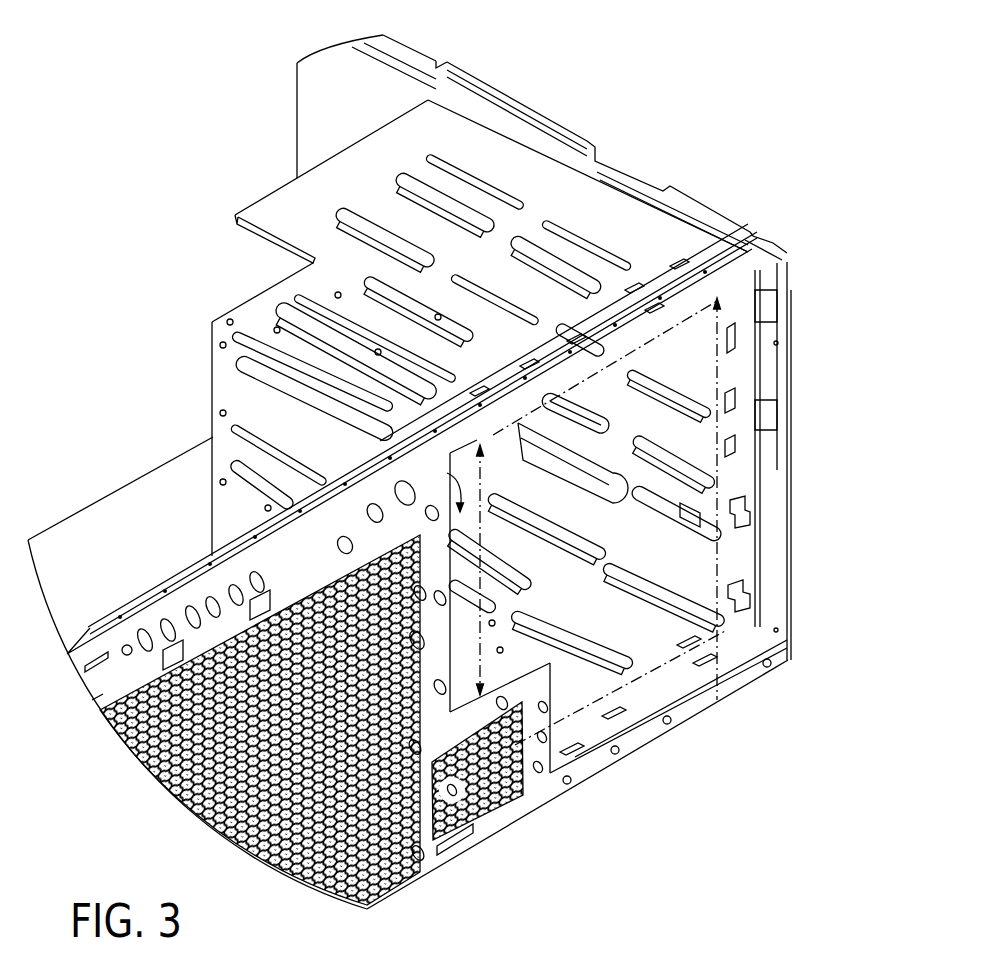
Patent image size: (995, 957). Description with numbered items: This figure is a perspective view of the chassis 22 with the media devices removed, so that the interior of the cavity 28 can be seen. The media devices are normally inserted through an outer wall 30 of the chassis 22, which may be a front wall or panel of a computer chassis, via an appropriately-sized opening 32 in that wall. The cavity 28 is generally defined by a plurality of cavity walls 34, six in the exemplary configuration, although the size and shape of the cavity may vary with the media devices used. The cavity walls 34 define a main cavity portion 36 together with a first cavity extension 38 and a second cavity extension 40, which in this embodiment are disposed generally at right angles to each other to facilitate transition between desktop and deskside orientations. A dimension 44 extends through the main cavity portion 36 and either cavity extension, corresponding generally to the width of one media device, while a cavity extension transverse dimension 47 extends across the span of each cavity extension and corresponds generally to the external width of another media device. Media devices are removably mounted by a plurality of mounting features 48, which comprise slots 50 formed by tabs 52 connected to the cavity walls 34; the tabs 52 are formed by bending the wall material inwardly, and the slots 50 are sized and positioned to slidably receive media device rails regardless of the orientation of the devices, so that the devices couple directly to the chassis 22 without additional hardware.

The chassis 22 is at (517, 88).
The cavity 28 is at (741, 472).
The outer wall 30 is at (488, 834).
The opening 32 is at (602, 745).
The cavity walls 34 is at (266, 312).
The main cavity portion 36 is at (680, 412).
The first cavity extension 38 is at (447, 473).
The second cavity extension 40 is at (665, 688).
The dimension 44 is at (495, 453).
The cavity extension transverse dimension 47 is at (478, 545).
The mounting features 48 is at (390, 200).
The slots 50 is at (650, 361).
The tabs 52 is at (557, 427).